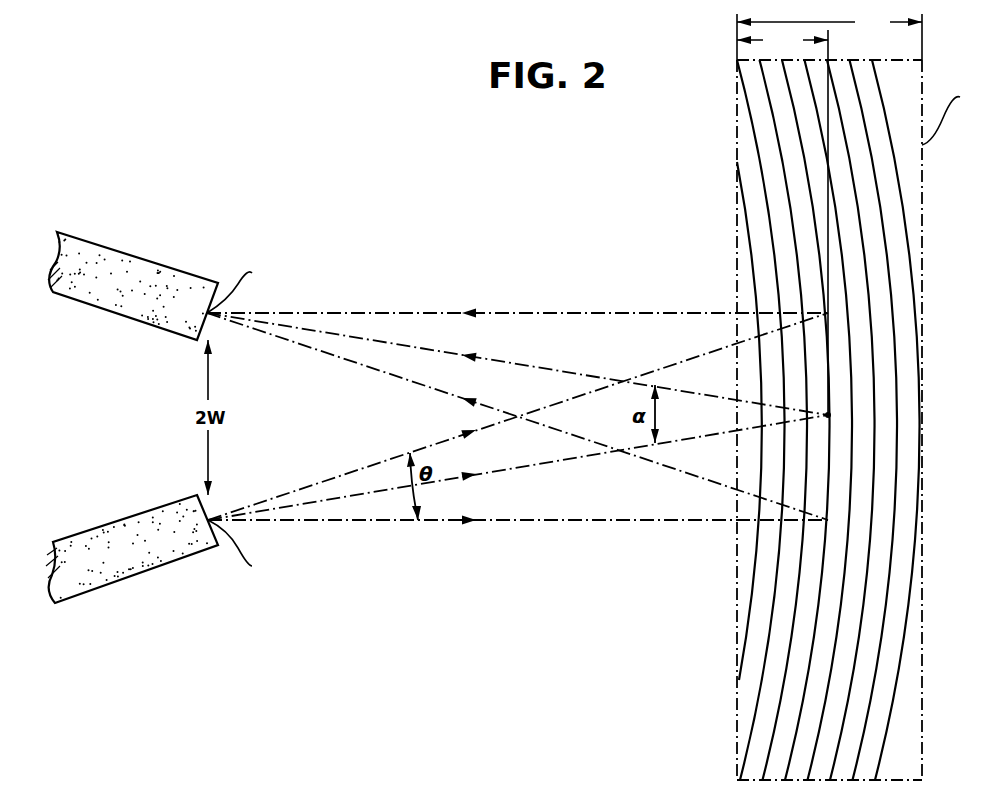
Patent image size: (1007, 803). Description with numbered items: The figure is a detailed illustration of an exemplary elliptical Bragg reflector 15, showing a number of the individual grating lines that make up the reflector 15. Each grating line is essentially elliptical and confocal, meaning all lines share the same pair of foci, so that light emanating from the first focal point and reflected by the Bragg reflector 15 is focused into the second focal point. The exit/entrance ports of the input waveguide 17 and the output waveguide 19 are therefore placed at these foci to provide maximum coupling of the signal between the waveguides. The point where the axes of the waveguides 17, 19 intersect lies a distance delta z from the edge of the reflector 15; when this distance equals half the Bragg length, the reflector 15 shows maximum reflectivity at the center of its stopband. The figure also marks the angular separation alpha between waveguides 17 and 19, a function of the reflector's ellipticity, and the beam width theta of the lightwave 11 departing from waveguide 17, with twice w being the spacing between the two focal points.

The lightwave 11 is at (357, 523).
The Bragg reflector 15 is at (737, 122).
The input waveguide 17 is at (180, 546).
The output waveguide 19 is at (178, 316).